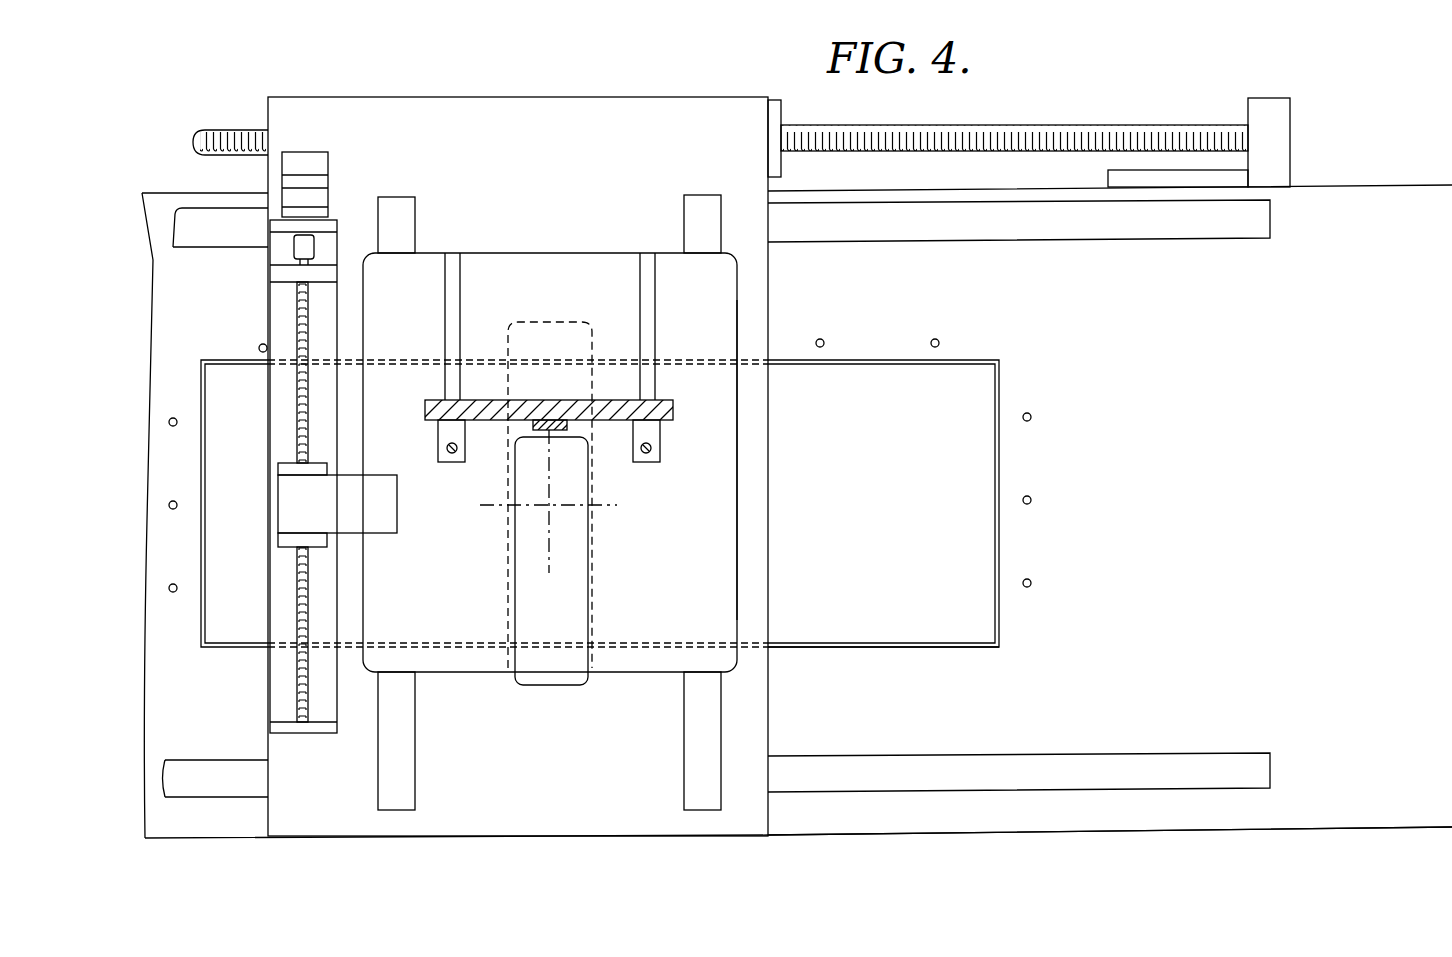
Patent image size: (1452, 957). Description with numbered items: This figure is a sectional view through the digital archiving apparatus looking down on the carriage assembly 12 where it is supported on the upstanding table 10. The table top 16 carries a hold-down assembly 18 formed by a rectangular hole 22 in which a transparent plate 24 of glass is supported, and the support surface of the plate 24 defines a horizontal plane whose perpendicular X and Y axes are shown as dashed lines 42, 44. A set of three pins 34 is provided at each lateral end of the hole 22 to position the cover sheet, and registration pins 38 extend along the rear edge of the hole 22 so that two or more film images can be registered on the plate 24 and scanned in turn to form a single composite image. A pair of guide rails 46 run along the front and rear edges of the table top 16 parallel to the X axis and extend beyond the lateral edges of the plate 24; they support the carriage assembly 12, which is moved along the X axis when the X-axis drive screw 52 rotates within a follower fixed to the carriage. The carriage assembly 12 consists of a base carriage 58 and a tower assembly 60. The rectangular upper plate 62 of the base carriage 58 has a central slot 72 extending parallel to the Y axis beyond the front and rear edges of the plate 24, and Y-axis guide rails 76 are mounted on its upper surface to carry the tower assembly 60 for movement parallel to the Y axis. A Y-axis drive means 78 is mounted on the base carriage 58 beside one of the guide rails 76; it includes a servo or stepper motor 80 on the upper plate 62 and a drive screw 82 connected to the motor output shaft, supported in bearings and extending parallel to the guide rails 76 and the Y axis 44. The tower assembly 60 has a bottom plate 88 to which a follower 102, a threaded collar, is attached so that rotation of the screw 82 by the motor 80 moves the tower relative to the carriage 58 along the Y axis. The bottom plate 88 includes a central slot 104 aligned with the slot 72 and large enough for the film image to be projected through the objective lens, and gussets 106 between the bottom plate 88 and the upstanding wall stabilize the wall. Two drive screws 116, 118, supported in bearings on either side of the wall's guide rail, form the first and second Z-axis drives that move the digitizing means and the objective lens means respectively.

The table 10 is at (838, 843).
The carriage assembly 12 is at (785, 304).
The table top 16 is at (1228, 820).
The hold-down assembly 18 is at (1042, 472).
The rectangular hole 22 is at (912, 640).
The transparent plate 24 is at (807, 632).
The pins 34 is at (1028, 584).
The registration pins 38 is at (936, 342).
The X axis 42 is at (604, 506).
The Y axis 44 is at (550, 542).
The guide rails 46 is at (1228, 228).
The X-axis drive screw 52 is at (1100, 130).
The base carriage 58 is at (528, 92).
The tower assembly 60 is at (558, 243).
The upper plate 62 is at (763, 525).
The central slot 72 is at (567, 685).
The Y-axis guide rails 76 is at (400, 782).
The Y-axis drive means 78 is at (338, 181).
The motor 80 is at (303, 160).
The drive screw 82 is at (297, 345).
The bottom plate 88 is at (487, 262).
The follower 102 is at (288, 500).
The central slot 104 is at (582, 605).
The gussets 106 is at (643, 308).
The drive screw 116 is at (442, 447).
The drive screw 118 is at (658, 443).